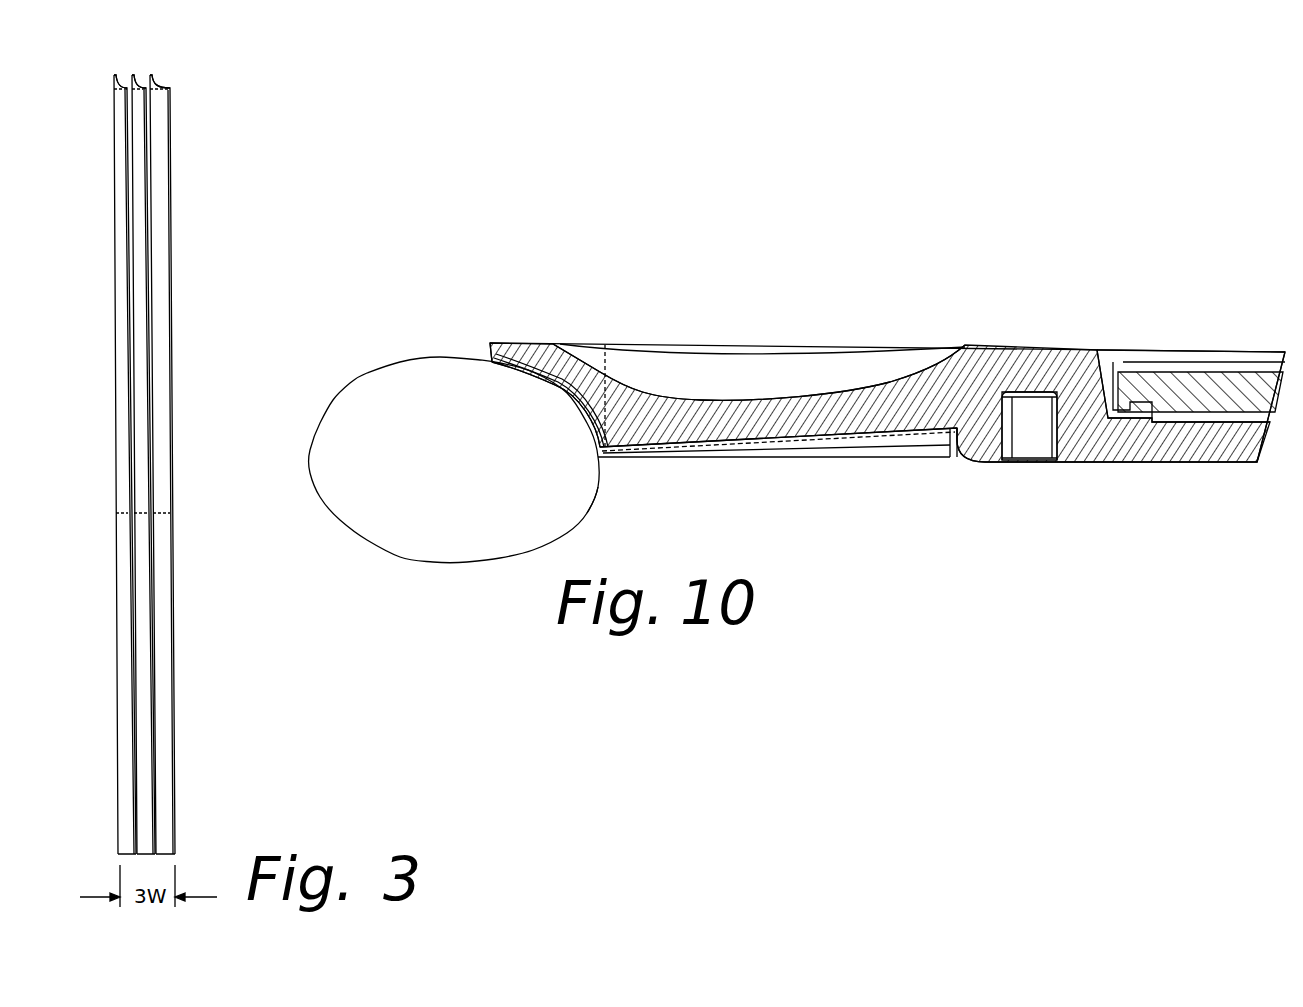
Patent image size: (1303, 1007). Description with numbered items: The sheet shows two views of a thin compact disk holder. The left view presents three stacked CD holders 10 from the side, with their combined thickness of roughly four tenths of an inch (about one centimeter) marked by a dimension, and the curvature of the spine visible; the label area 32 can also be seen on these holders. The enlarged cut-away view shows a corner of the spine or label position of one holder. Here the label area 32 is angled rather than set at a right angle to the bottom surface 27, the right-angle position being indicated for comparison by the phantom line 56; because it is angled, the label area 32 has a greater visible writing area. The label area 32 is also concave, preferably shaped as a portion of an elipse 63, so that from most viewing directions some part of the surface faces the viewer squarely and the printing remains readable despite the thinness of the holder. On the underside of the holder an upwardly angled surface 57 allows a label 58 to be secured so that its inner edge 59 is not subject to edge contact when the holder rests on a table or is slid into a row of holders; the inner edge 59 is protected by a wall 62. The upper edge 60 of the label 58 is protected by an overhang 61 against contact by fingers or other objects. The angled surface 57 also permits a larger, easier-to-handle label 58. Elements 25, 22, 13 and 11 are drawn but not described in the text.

In FIG. 3, the CD holder 10 is at (160, 230).
In FIG. 3, the strip 25 is at (160, 335).
In FIG. 3, the bottom surface 27 is at (113, 252).
In FIG. 10, the bottom surface 27 is at (1107, 368).
In FIG. 3, the label area 32 is at (153, 76).
In FIG. 10, the label area 32 is at (527, 430).
In FIG. 10, the phantom line 56 is at (610, 368).
In FIG. 10, the upwardly angled surface 57 is at (788, 440).
In FIG. 10, the label 58 is at (843, 440).
In FIG. 10, the inner edge 59 is at (950, 447).
In FIG. 10, the upper edge 60 is at (500, 372).
In FIG. 10, the overhang 61 is at (497, 362).
In FIG. 10, the wall 62 is at (957, 460).
In FIG. 10, the elipse 63 is at (590, 515).
In FIG. 10, the channel 22 is at (1147, 403).
In FIG. 10, the end edge 13 is at (1243, 420).
In FIG. 10, the block 11 is at (1190, 370).